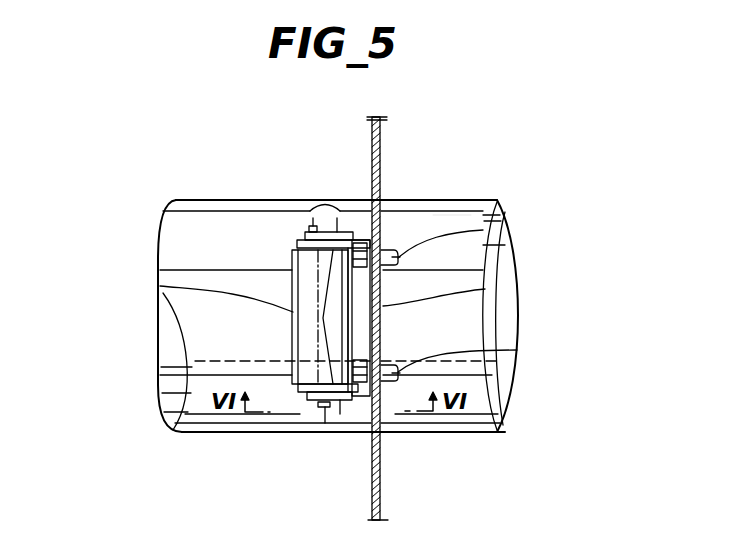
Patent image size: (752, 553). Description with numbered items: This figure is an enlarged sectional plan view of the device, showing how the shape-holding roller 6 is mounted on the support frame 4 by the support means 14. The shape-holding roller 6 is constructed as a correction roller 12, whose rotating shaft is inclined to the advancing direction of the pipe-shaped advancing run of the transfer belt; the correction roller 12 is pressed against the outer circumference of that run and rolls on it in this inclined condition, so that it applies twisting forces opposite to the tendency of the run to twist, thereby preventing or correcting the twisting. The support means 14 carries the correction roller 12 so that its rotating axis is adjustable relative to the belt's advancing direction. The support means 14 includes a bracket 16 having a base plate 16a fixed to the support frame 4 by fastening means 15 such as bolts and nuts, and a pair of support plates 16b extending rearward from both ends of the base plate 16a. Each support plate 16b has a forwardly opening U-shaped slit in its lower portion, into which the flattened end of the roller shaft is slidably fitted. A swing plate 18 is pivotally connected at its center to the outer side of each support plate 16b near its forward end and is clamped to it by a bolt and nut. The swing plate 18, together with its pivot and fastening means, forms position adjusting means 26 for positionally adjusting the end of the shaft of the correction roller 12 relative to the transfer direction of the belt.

The support frame 4 is at (381, 170).
The shape-holding roller 6 is at (284, 316).
The correction roller 12 is at (172, 290).
The support means 14 is at (358, 403).
The fastening means 15 is at (497, 216).
The bracket 16 is at (388, 301).
The base plate 16a is at (500, 278).
The support plate 16b is at (433, 215).
The swing plate 18 is at (300, 238).
The position adjusting means 26 is at (348, 236).